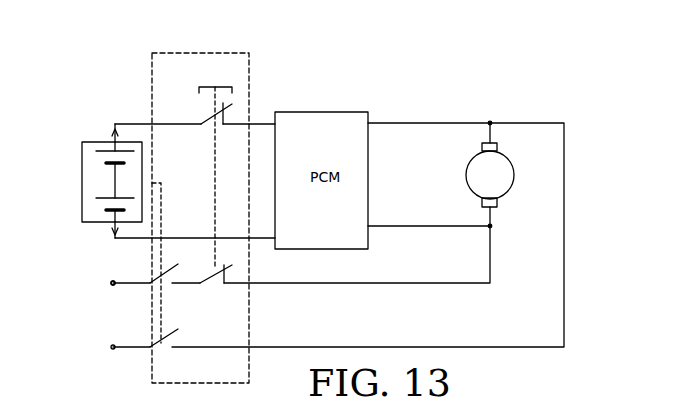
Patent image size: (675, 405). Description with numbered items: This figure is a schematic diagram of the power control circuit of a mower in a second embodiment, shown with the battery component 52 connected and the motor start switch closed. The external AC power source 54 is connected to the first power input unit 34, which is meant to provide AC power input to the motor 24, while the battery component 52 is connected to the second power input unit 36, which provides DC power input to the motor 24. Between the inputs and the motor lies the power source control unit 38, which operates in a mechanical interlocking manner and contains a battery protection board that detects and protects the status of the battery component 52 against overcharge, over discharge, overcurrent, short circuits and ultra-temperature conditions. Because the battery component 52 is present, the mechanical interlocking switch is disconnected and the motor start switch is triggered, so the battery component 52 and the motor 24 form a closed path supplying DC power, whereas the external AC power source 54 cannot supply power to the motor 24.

The motor 24 is at (504, 168).
The first power input unit 34 is at (113, 283).
The second power input unit 36 is at (113, 130).
The power source control unit 38 is at (249, 53).
The battery component 52 is at (100, 142).
The external AC power source 54 is at (92, 312).